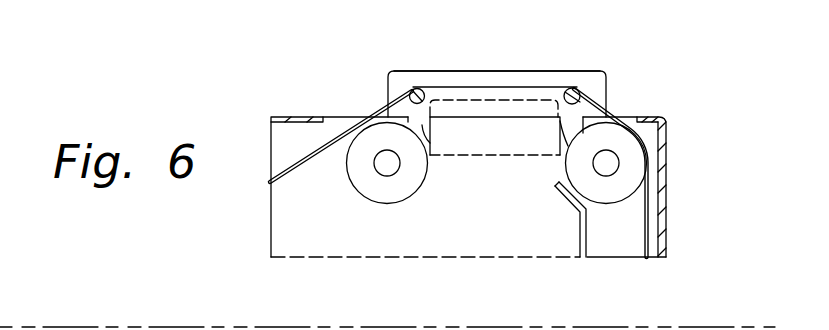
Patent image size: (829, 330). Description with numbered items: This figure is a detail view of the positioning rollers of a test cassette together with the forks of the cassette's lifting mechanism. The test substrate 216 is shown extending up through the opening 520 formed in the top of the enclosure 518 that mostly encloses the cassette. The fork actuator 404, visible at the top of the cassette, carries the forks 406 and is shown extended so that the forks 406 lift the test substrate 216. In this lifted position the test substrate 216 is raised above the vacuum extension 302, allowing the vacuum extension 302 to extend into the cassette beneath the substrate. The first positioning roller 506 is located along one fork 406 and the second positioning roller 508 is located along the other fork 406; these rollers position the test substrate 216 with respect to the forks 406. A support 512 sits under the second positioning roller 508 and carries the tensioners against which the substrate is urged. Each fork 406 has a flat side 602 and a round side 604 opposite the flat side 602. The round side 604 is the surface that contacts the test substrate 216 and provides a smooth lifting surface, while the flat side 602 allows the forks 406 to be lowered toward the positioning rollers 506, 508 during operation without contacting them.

The flat side 602 is at (408, 93).
The round side 604 is at (415, 88).
The test substrate 216 is at (470, 86).
The fork actuator 404 is at (523, 71).
The forks 406 is at (575, 88).
The opening 520 is at (339, 112).
The first positioning roller 506 is at (372, 187).
The second positioning roller 508 is at (598, 187).
The vacuum extension 302 is at (470, 157).
The support 512 is at (572, 207).
The enclosure 518 is at (667, 203).